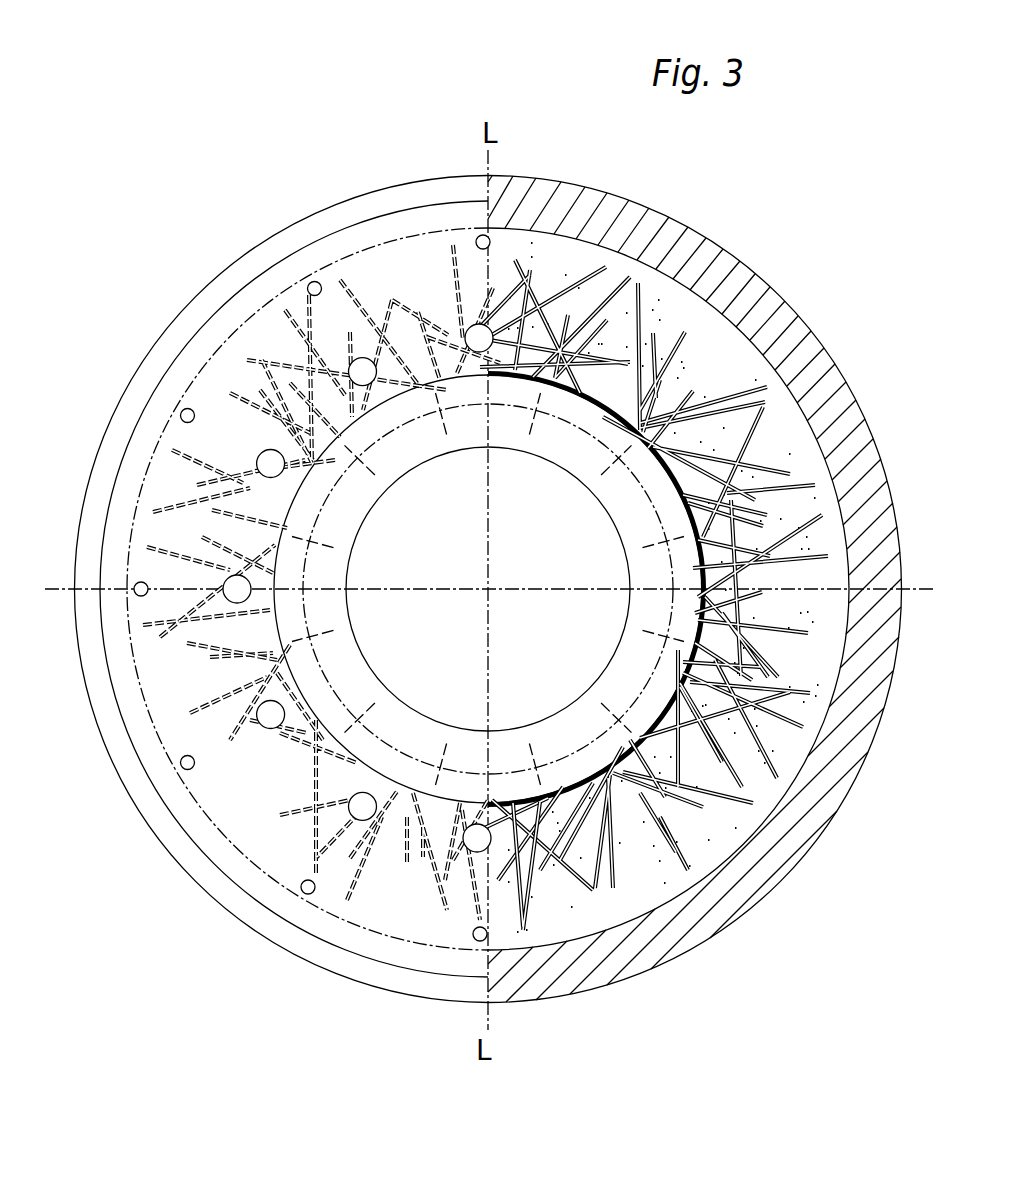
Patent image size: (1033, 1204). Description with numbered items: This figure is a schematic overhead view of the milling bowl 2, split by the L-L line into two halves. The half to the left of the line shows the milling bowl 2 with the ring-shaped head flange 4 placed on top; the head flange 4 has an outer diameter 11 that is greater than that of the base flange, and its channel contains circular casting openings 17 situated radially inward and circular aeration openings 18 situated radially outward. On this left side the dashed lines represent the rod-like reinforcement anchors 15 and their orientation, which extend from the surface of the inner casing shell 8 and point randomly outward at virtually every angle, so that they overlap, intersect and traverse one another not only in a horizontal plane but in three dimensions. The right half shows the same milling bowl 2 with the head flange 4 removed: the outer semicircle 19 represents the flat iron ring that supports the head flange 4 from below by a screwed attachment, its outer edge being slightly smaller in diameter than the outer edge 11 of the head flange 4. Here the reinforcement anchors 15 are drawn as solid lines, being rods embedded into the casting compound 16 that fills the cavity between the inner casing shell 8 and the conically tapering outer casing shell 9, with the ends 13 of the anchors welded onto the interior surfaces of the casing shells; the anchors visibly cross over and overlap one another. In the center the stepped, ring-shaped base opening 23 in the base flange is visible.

The milling bowl 2 is at (402, 98).
The head flange 4 is at (283, 343).
The inner casing shell 8 is at (291, 502).
The outer casing shell 9 is at (739, 351).
The outer diameter 11 is at (343, 203).
The ends of the reinforcement anchors 13 is at (513, 803).
The reinforcement anchors 15 is at (240, 693).
The casting compound 16 is at (712, 830).
The casting openings 17 is at (236, 586).
The aeration openings 18 is at (185, 410).
The flat iron ring 19 is at (749, 266).
The base opening 23 is at (452, 661).